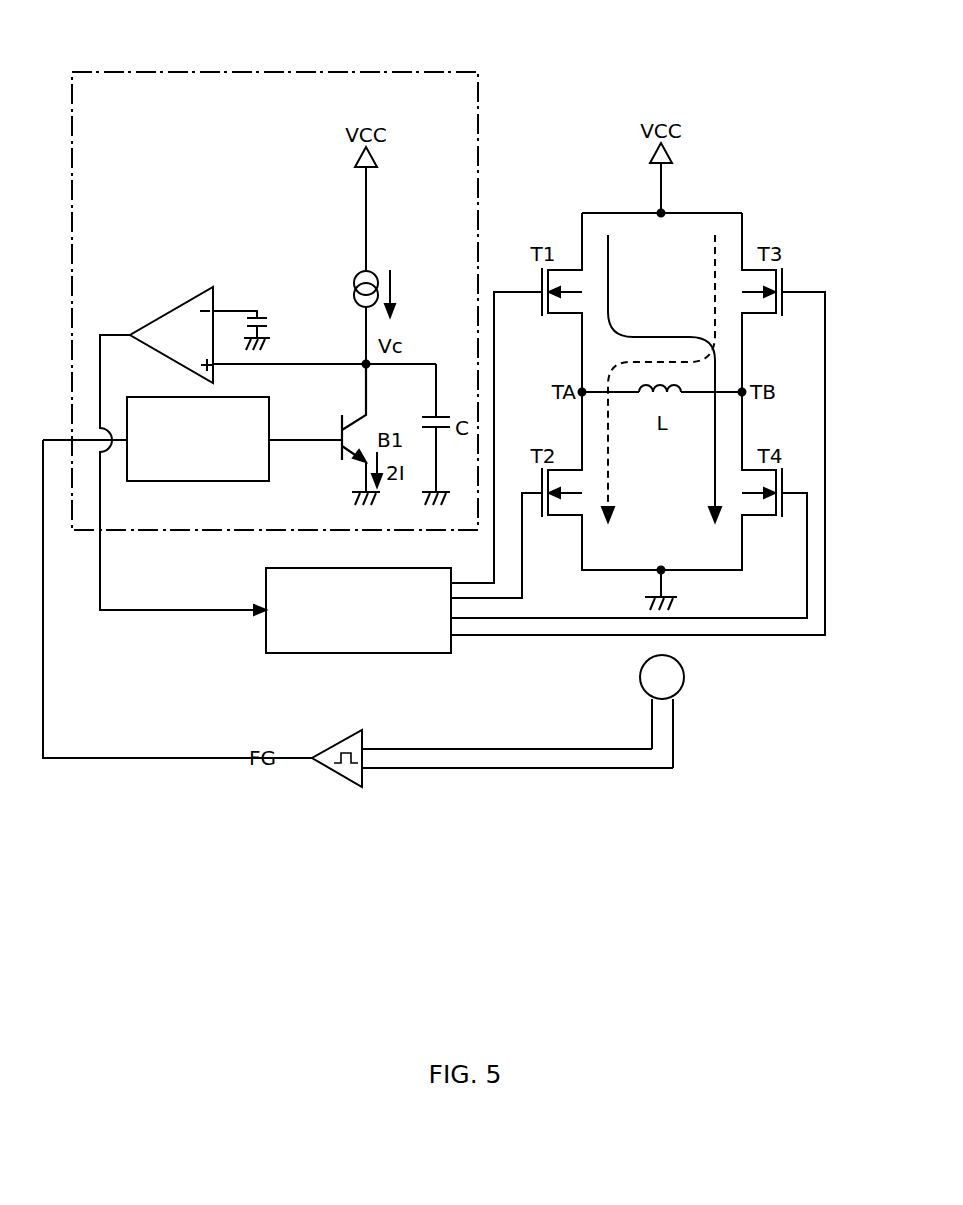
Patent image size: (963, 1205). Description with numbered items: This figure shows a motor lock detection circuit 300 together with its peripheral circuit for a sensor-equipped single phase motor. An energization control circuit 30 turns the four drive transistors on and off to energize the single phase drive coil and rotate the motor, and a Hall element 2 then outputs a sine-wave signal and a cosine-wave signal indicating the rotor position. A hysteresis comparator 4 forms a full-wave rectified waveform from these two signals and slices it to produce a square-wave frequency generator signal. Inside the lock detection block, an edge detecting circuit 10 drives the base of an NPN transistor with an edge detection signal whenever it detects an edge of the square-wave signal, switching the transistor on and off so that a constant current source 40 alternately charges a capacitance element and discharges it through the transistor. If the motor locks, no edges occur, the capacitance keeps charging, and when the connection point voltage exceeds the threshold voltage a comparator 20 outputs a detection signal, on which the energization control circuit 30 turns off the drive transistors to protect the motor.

The motor lock detection circuit 300 is at (405, 72).
The comparator 20 is at (163, 317).
The constant current source 40 is at (376, 274).
The edge detecting circuit 10 is at (254, 397).
The energization control circuit 30 is at (428, 568).
The hysteresis comparator 4 is at (333, 746).
The Hall element 2 is at (684, 671).